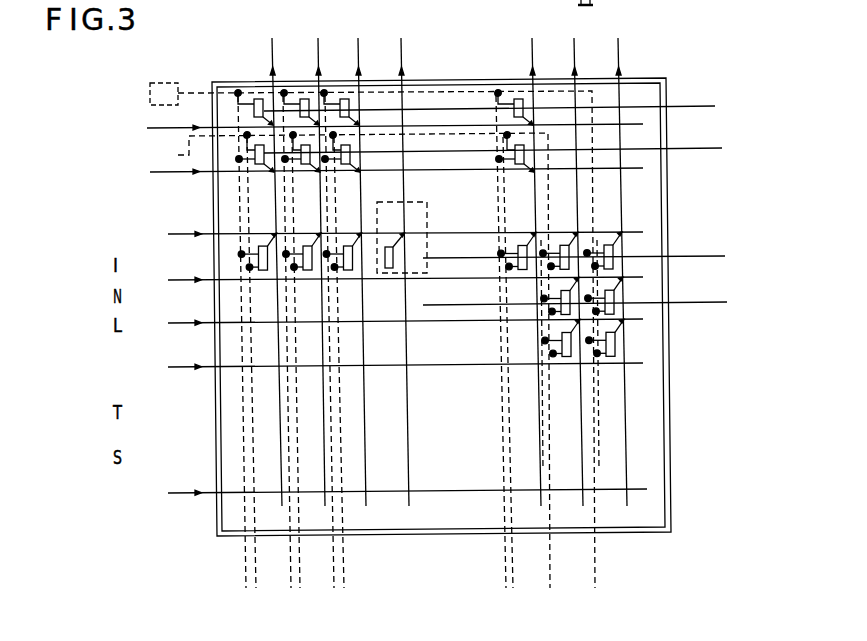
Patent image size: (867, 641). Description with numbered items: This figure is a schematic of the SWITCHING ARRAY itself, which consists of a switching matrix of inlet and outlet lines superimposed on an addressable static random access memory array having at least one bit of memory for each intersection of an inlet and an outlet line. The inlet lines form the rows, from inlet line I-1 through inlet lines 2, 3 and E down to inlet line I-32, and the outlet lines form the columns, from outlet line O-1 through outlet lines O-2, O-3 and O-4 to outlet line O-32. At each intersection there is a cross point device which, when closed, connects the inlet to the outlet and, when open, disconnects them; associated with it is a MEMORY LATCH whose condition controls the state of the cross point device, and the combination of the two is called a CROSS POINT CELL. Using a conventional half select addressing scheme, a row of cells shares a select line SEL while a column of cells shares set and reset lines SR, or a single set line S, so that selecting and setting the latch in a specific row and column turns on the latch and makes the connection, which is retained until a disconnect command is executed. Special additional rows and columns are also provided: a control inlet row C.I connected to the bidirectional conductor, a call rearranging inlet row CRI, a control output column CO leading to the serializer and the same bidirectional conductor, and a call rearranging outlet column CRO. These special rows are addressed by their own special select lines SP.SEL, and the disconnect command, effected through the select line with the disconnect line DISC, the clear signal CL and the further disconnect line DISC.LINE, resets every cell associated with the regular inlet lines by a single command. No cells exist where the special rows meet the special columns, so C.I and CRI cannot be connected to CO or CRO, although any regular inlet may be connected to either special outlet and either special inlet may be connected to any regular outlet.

The switching array SWITCHING ARRAY is at (683, 480).
The outlet line O-1 is at (270, 259).
The outlet line O-2 is at (316, 259).
The outlet line O-3 is at (356, 259).
The outlet line O-4 is at (398, 259).
The outlet line O-32 is at (531, 259).
The control output line CO is at (573, 259).
The call rearranging outlet CRO is at (617, 259).
The special select line SP.SEL is at (517, 129).
The select line SEL is at (589, 278).
The call rearranging inlet CRI is at (374, 128).
The control inlet C.I is at (376, 172).
The inlet line I-1 is at (378, 235).
The inlet line 2 is at (388, 280).
The inlet line 3 is at (388, 325).
The inlet line E is at (378, 366).
The inlet line I-32 is at (379, 493).
The disconnect line DISC is at (349, 337).
The clear signal CL is at (164, 94).
The disconnect line DISC.LINE is at (328, 360).
The set and reset lines SR is at (379, 354).
The set line S is at (570, 426).
The cell CROSS POINT CELL is at (388, 228).
The memory latch MEMORY LATCH is at (392, 269).